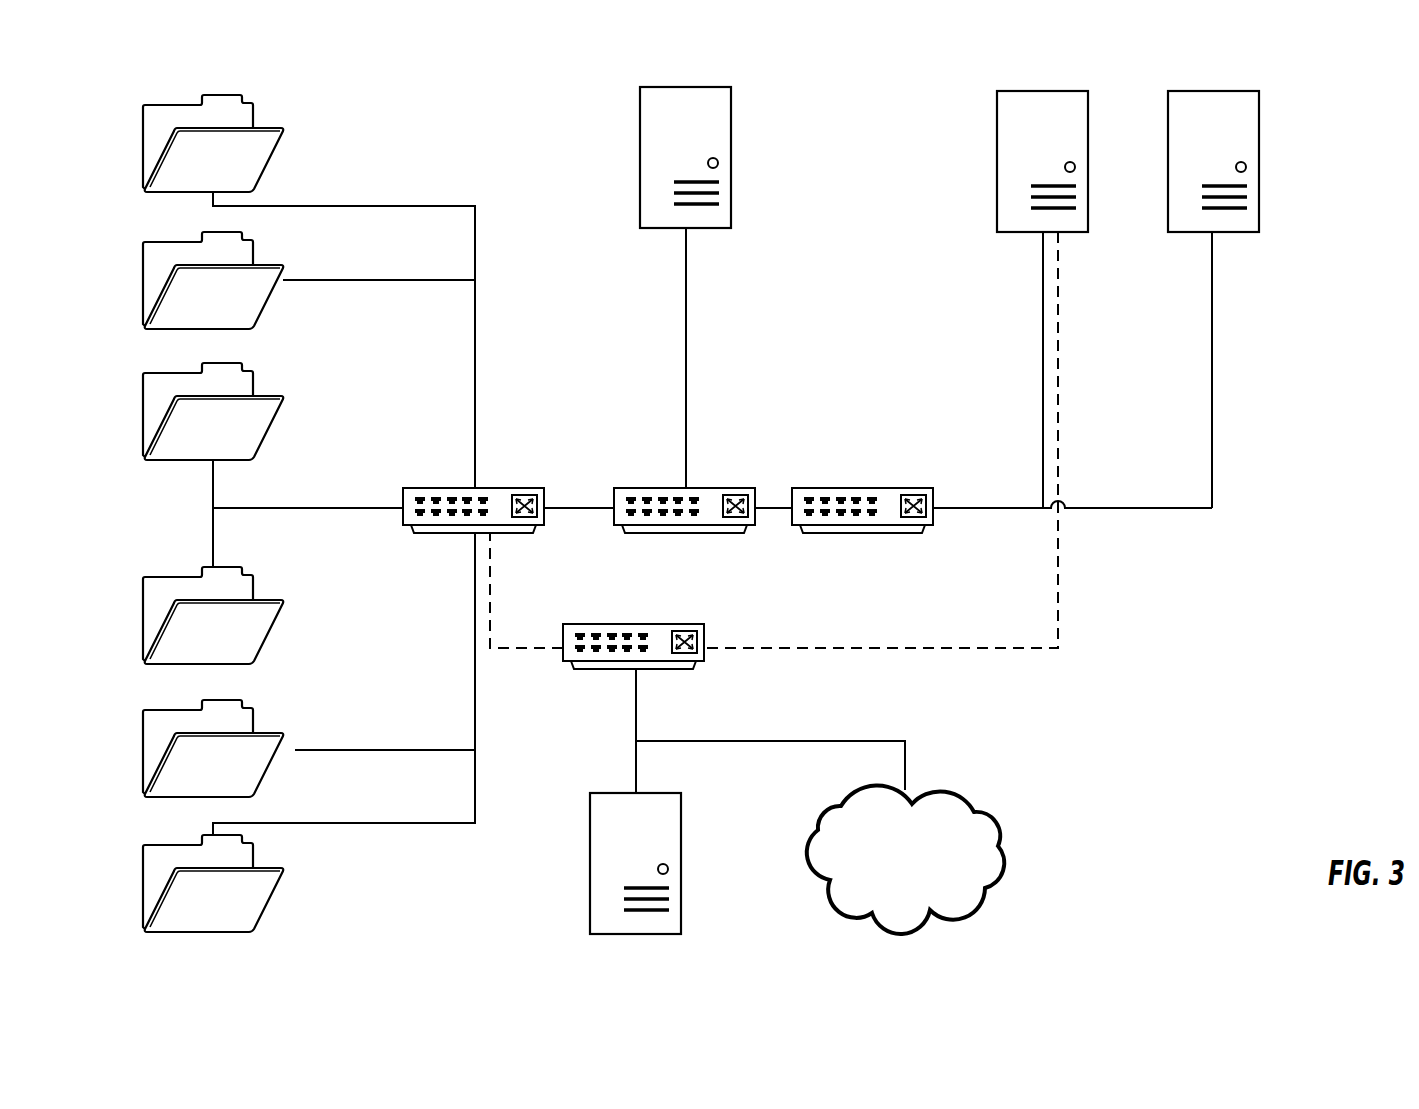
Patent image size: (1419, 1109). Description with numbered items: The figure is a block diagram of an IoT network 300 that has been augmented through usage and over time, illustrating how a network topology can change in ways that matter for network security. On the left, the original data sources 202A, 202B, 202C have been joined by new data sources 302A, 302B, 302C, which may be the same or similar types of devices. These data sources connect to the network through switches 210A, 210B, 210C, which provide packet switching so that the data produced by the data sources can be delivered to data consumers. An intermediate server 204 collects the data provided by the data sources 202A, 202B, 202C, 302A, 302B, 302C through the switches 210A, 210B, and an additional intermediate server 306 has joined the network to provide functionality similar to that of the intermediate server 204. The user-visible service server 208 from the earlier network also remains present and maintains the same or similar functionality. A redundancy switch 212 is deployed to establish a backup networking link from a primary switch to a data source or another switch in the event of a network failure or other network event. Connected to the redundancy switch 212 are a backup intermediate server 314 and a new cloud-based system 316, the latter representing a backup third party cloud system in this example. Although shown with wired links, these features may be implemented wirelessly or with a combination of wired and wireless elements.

The IoT network 300 is at (372, 70).
The data source 202A is at (172, 104).
The data source 202B is at (170, 240).
The data source 202C is at (176, 372).
The data source 302A is at (174, 576).
The data source 302B is at (171, 709).
The data source 302C is at (171, 844).
The switch 210A is at (425, 487).
The switch 210B is at (636, 487).
The switch 210C is at (813, 487).
The redundancy switch 212 is at (611, 623).
The intermediate server 204 is at (656, 87).
The additional intermediate server 306 is at (1020, 90).
The user-visible service server 208 is at (1194, 90).
The backup intermediate server 314 is at (613, 792).
The cloud-based system 316 is at (860, 789).